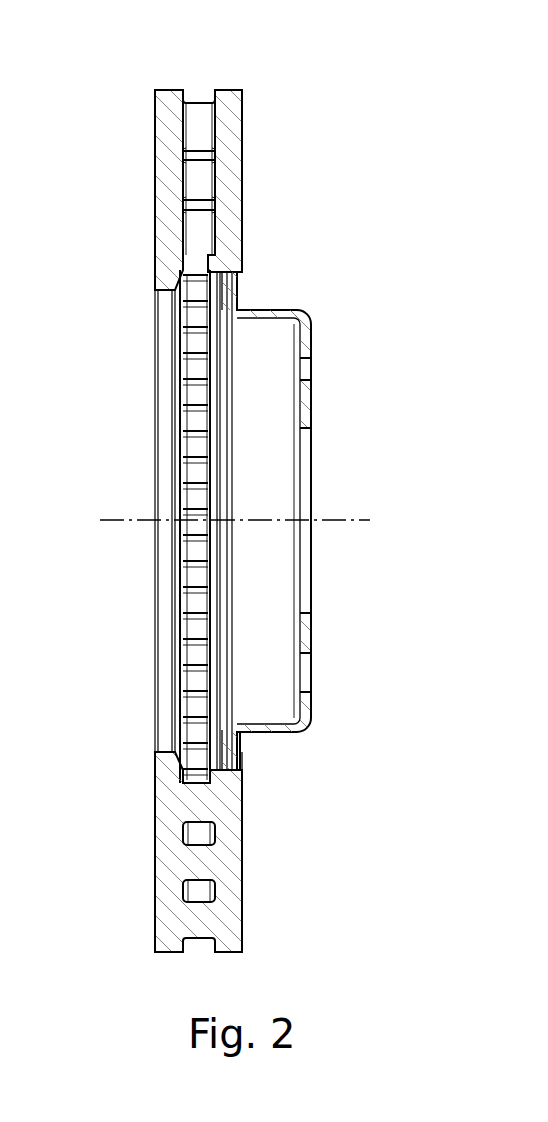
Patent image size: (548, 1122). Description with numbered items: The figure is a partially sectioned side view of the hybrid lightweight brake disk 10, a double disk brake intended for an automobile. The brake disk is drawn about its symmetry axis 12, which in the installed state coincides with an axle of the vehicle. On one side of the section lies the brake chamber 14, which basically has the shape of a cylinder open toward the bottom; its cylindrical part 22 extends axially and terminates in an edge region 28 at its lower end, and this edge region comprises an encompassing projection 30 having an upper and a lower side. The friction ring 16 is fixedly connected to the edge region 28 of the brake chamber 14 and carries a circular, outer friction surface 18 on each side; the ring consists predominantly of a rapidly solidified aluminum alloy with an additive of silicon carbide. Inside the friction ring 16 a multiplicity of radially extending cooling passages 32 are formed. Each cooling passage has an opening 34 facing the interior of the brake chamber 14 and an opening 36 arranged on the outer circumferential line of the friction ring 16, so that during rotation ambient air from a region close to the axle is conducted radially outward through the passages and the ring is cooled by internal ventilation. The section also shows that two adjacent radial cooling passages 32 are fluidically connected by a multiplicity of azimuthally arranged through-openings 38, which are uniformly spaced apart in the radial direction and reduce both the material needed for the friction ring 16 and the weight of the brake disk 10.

The hybrid lightweight brake disk 10 is at (50, 87).
The symmetry axis 12 is at (352, 520).
The brake chamber 14 is at (311, 696).
The friction ring 16 is at (166, 770).
The friction surface 18 is at (243, 862).
The cylindrical part 22 is at (275, 320).
The edge region 28 is at (252, 745).
The encompassing projection 30 is at (243, 752).
The radial cooling passages 32 is at (200, 152).
The opening 34 is at (200, 240).
The opening 36 is at (200, 103).
The through-openings 38 is at (190, 890).